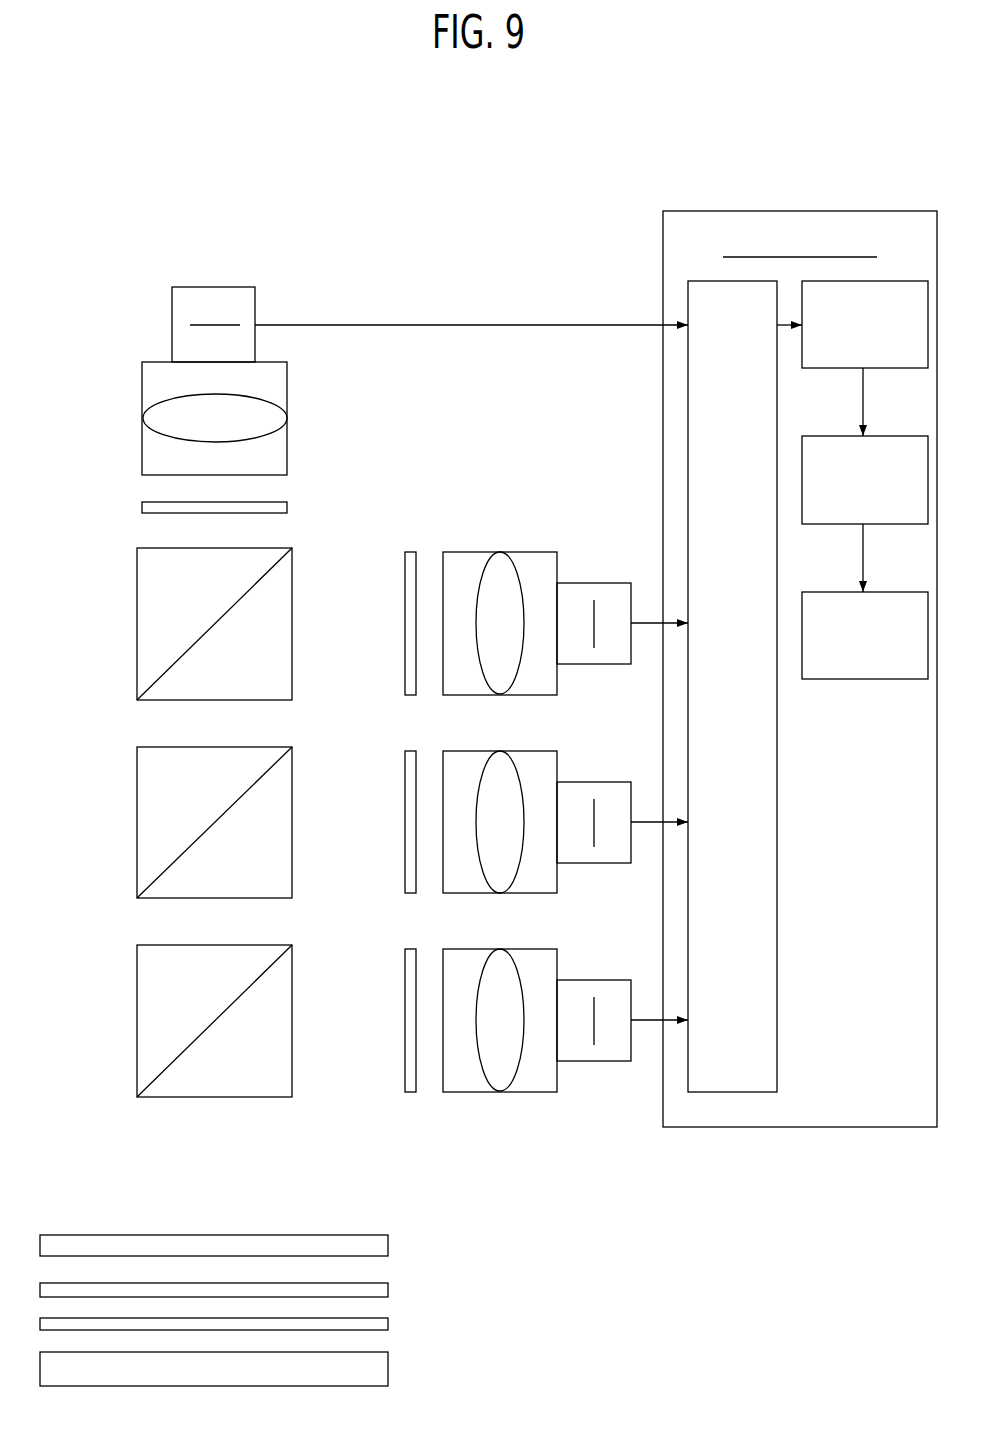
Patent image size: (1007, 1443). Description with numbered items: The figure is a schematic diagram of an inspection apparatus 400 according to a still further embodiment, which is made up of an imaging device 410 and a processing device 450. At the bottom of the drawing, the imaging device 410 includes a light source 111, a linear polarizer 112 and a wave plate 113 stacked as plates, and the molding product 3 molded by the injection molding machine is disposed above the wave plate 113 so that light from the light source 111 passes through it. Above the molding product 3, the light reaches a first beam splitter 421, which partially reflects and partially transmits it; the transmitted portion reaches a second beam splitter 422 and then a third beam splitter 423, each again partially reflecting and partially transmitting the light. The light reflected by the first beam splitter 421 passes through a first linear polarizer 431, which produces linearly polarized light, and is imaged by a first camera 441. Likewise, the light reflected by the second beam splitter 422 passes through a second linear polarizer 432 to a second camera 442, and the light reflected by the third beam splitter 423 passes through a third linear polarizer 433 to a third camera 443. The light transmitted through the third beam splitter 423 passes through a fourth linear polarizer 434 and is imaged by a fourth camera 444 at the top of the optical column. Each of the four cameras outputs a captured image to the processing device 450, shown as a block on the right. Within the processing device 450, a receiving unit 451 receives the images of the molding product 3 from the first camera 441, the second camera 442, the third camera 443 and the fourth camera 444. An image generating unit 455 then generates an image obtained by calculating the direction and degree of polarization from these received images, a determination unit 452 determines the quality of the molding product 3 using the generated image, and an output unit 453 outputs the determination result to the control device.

The inspection apparatus 400 is at (95, 145).
The imaging device 410 is at (162, 233).
The fourth camera 444 is at (172, 320).
The fourth linear polarizer 434 is at (142, 505).
The third beam splitter 423 is at (137, 621).
The second beam splitter 422 is at (137, 820).
The first beam splitter 421 is at (137, 1018).
The third linear polarizer 433 is at (410, 696).
The second linear polarizer 432 is at (410, 894).
The first linear polarizer 431 is at (410, 1093).
The third camera 443 is at (600, 665).
The second camera 442 is at (600, 864).
The first camera 441 is at (600, 1061).
The processing device 450 is at (897, 211).
The receiving unit 451 is at (777, 932).
The image generating unit 455 is at (887, 368).
The determination unit 452 is at (887, 524).
The output unit 453 is at (887, 679).
The molding product 3 is at (388, 1243).
The wave plate 113 is at (388, 1290).
The linear polarizer 112 is at (388, 1324).
The light source 111 is at (388, 1366).